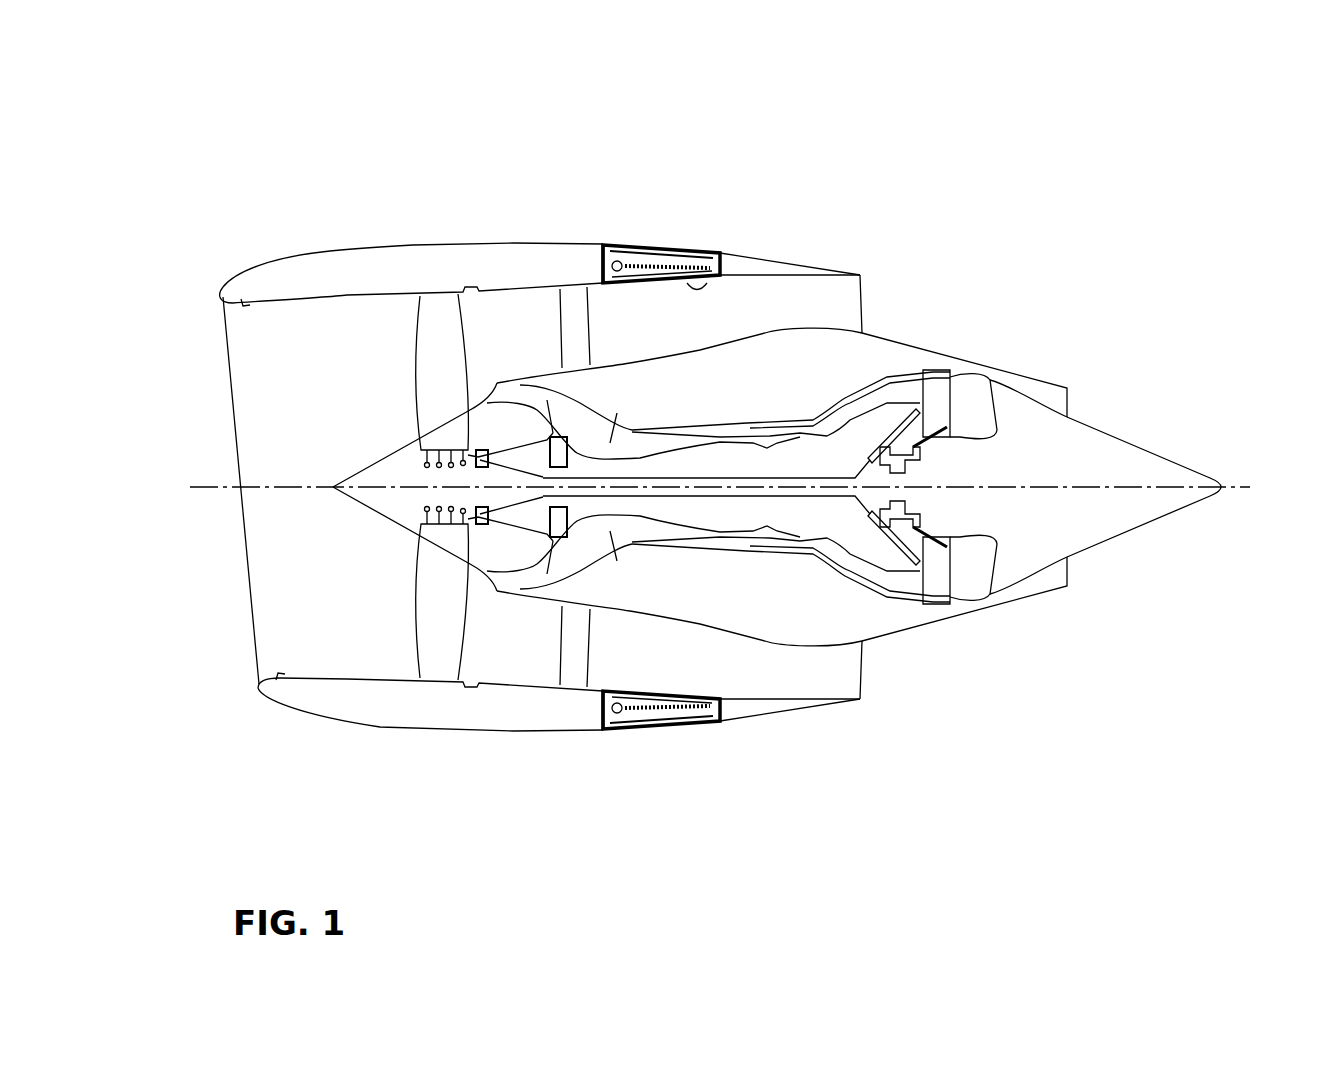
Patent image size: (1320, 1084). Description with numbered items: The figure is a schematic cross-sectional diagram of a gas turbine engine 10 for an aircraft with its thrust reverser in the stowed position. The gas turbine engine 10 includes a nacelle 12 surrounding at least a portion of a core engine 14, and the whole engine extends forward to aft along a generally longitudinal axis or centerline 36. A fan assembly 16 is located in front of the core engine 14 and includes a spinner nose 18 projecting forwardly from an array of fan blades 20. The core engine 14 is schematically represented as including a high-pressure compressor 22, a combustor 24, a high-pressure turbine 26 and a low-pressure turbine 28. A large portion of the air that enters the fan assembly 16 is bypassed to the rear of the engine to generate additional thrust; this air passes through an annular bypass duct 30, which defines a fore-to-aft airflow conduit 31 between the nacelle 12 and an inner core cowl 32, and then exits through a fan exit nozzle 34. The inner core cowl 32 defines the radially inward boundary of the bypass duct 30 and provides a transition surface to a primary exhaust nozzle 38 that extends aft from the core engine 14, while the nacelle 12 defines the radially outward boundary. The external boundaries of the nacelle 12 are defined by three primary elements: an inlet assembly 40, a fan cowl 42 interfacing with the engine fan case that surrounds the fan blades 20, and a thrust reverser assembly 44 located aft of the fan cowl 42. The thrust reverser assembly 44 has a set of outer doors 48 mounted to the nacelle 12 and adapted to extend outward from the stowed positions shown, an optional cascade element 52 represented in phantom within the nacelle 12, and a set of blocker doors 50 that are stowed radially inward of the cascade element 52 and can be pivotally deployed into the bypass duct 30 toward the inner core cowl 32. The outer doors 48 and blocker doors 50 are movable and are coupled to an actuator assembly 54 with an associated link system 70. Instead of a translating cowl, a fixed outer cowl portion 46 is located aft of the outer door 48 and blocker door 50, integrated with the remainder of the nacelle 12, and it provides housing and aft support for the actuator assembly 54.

The gas turbine engine 10 is at (922, 178).
The nacelle 12 is at (445, 228).
The core engine 14 is at (895, 615).
The fan assembly 16 is at (398, 590).
The spinner nose 18 is at (374, 507).
The fan blades 20 is at (433, 347).
The high-pressure compressor 22 is at (613, 440).
The combustor 24 is at (770, 440).
The high-pressure turbine 26 is at (822, 549).
The low-pressure turbine 28 is at (897, 390).
The bypass duct 30 is at (512, 346).
The airflow conduit 31 is at (742, 300).
The inner core cowl 32 is at (763, 333).
The fan exit nozzle 34 is at (888, 292).
The centerline 36 is at (218, 487).
The primary exhaust nozzle 38 is at (1118, 428).
The inlet assembly 40 is at (322, 250).
The fan cowl 42 is at (526, 240).
The thrust reverser assembly 44 is at (632, 220).
The fixed outer cowl portion 46 is at (780, 258).
The outer doors 48 is at (647, 249).
The blocker doors 50 is at (722, 258).
The cascade element 52 is at (616, 260).
The actuator assembly 54 is at (602, 250).
The link system 70 is at (699, 248).